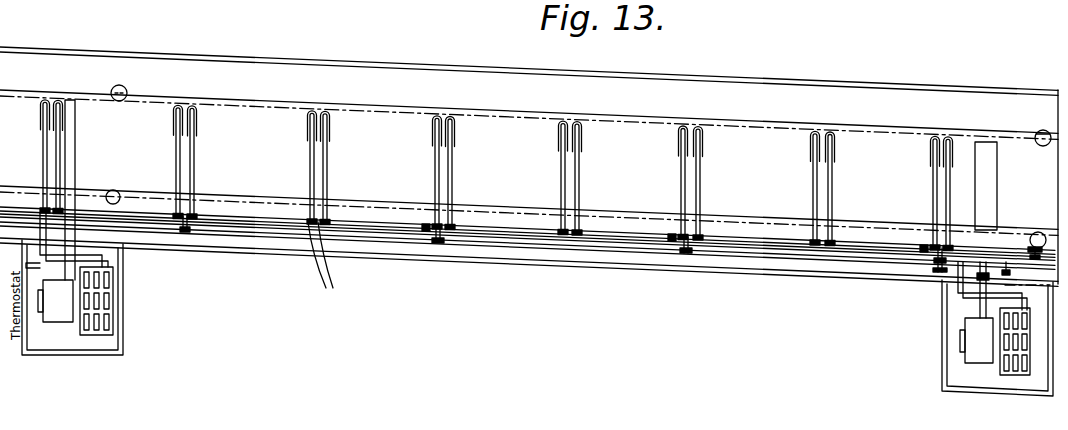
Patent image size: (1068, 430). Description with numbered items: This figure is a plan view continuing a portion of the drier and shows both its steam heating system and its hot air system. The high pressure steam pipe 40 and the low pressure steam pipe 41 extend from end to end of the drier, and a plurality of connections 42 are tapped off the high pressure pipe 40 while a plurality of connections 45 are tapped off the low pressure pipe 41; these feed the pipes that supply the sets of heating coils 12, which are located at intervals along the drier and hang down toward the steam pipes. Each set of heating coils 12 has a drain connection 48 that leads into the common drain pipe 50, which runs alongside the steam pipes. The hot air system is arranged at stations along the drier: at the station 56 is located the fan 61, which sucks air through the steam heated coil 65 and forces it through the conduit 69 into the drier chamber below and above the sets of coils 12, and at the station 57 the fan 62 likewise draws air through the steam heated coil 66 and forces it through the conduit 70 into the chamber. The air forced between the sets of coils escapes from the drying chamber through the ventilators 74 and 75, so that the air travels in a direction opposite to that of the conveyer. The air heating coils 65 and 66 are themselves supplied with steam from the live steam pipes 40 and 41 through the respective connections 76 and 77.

The heating coils 12 is at (59, 100).
The high pressure steam pipe 40 is at (228, 236).
The low pressure steam pipe 41 is at (284, 224).
The connection 42 is at (186, 216).
The connection 45 is at (434, 222).
The drain connection 48 is at (321, 261).
The common drain pipe 50 is at (378, 225).
The station 56 is at (123, 315).
The station 57 is at (945, 344).
The fan 61 is at (55, 310).
The fan 62 is at (975, 350).
The steam heated coil 65 is at (105, 321).
The steam heated coil 66 is at (1005, 366).
The conduit 69 is at (70, 143).
The conduit 70 is at (991, 185).
The ventilator 74 is at (128, 91).
The ventilator 75 is at (1036, 132).
The connection 76 is at (88, 248).
The connection 77 is at (36, 265).